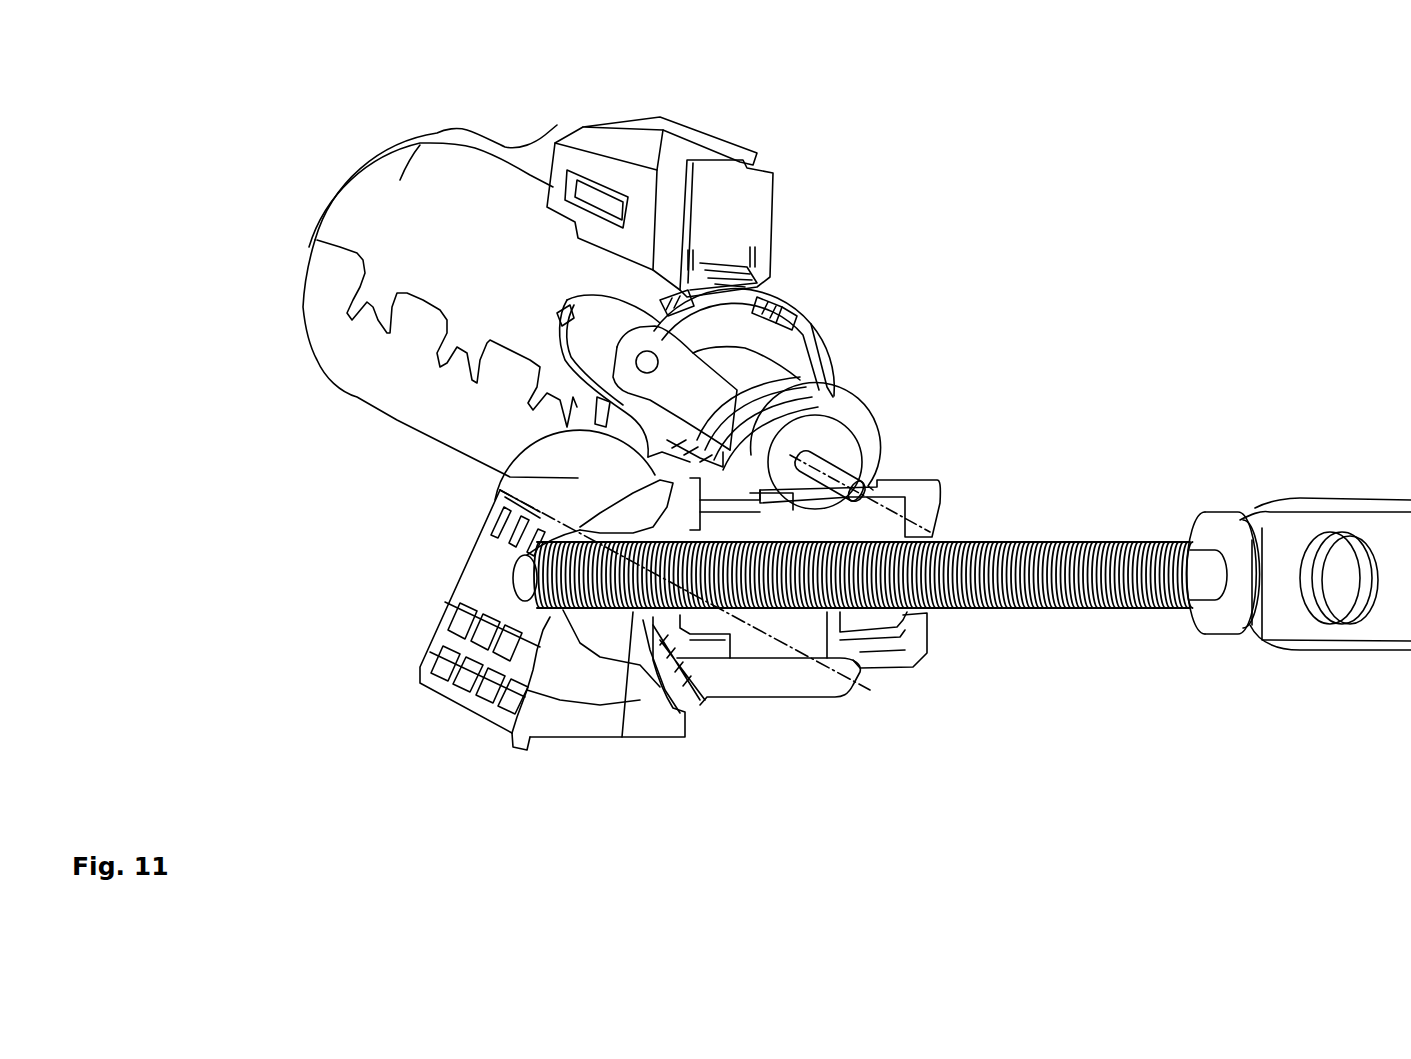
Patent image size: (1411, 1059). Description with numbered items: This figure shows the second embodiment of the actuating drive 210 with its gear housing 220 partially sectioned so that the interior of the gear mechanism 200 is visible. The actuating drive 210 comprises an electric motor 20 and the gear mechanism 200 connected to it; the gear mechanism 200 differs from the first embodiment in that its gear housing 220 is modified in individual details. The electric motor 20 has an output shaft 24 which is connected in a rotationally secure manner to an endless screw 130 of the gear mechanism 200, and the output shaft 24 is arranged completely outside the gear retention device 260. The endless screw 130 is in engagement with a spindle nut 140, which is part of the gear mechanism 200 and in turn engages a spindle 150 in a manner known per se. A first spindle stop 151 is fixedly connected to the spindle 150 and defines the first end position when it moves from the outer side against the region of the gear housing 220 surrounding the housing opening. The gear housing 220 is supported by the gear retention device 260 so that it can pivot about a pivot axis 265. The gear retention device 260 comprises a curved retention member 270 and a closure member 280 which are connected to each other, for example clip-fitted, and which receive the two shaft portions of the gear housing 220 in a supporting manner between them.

The actuating drive 210 is at (352, 110).
The electric motor 20 is at (557, 125).
The gear mechanism 200 is at (924, 148).
The gear housing 220 is at (843, 407).
The endless screw 130 is at (877, 435).
The output shaft 24 is at (907, 483).
The pivot axis 265 is at (495, 483).
The spindle nut 140 is at (857, 660).
The spindle 150 is at (1093, 612).
The first spindle stop 151 is at (1223, 627).
The curved retention member 270 is at (563, 713).
The gear retention device 260 is at (618, 752).
The closure member 280 is at (660, 717).